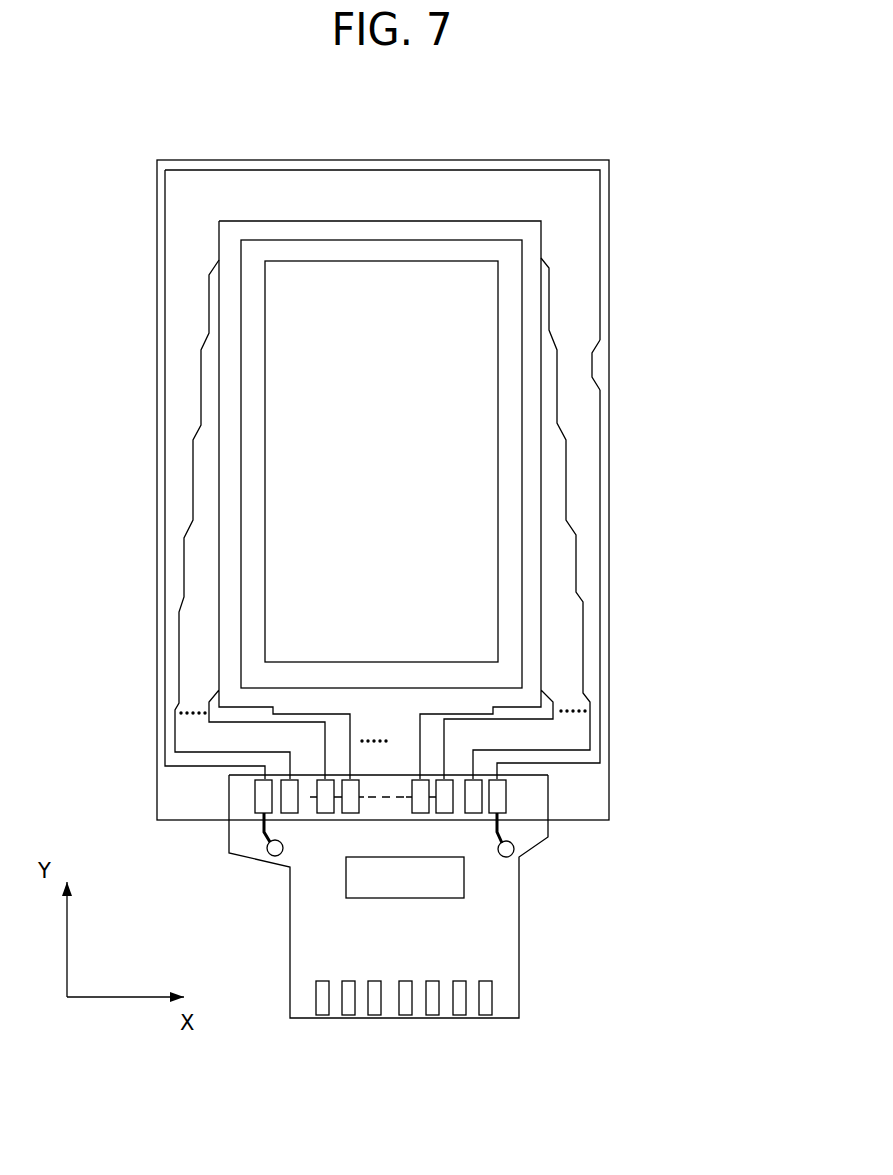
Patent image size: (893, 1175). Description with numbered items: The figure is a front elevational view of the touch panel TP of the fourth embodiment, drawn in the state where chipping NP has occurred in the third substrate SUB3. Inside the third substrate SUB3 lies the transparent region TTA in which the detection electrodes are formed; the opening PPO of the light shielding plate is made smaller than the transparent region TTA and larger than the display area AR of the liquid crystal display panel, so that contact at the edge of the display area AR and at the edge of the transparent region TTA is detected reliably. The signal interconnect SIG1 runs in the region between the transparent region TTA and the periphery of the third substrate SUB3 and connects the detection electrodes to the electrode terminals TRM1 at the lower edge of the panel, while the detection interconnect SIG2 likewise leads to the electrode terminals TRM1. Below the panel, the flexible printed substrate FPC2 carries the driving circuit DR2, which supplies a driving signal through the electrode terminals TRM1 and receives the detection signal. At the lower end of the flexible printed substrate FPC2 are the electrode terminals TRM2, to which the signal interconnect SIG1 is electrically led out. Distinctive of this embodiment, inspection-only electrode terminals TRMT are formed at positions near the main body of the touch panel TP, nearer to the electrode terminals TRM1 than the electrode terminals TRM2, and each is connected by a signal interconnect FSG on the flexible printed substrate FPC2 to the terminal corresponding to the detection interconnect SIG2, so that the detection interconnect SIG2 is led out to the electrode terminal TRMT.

The touch panel TP is at (380, 158).
The transparent region TTA is at (441, 218).
The display area AR is at (446, 256).
The opening PPO is at (523, 260).
The chipping NP is at (603, 362).
The detection interconnect SIG2 is at (605, 441).
The signal interconnect SIG1 is at (569, 575).
The third substrate SUB3 is at (613, 661).
The electrode terminal TRM1 is at (511, 797).
The signal interconnect FSG is at (254, 838).
The electrode terminal TRMT is at (266, 856).
The driving circuit DR2 is at (468, 878).
The flexible printed substrate FPC2 is at (522, 962).
The electrode terminal TRM2 is at (495, 1001).